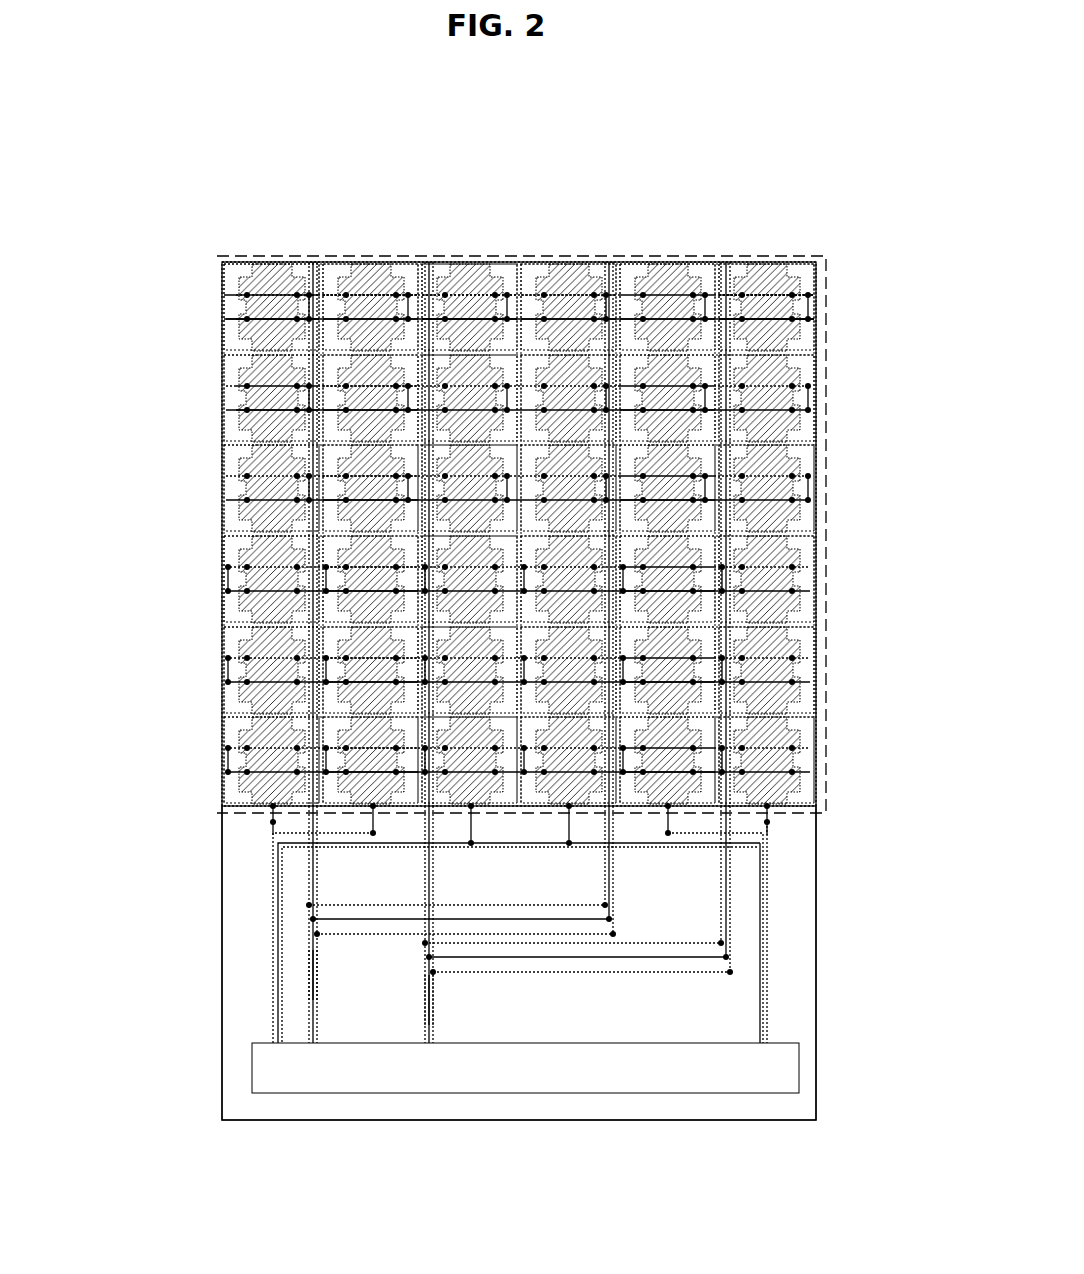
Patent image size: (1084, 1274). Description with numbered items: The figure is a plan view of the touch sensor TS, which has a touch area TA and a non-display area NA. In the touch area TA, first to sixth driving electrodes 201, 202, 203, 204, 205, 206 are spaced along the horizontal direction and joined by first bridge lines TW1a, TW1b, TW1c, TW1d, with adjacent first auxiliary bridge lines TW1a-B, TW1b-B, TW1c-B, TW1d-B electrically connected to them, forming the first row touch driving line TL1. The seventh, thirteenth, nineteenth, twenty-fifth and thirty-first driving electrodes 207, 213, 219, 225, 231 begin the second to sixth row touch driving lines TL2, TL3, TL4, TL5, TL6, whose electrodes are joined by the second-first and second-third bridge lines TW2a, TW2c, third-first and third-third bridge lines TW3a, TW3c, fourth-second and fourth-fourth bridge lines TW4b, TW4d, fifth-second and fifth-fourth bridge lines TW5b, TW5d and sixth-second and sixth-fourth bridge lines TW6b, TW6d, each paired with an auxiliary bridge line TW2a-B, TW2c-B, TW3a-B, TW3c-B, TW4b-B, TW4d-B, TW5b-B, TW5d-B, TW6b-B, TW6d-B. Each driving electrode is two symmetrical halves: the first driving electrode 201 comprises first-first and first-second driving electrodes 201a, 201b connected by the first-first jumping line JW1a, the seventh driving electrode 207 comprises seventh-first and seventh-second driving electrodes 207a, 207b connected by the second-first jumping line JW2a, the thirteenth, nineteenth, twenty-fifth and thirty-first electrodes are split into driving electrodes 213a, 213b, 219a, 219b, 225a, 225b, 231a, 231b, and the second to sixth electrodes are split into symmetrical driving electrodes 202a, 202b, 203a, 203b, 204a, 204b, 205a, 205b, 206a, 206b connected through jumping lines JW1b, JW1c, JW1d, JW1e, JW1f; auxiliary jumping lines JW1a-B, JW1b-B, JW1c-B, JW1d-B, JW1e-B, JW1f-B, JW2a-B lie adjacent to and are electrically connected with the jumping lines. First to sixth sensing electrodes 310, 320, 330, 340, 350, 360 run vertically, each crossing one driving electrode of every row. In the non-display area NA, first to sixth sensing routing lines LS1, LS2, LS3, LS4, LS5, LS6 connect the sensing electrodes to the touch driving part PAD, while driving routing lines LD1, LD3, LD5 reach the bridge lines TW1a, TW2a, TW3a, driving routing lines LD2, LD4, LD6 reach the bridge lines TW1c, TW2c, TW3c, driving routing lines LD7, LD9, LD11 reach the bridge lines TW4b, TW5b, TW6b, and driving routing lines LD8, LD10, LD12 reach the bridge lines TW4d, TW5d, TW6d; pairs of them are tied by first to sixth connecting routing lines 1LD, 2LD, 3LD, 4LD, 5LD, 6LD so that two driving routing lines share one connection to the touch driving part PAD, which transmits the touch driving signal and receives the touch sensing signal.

The first driving electrode 201 is at (282, 258).
The first-first driving electrode 201a is at (240, 262).
The first-second driving electrode 201b is at (297, 262).
The second driving electrode 202 is at (384, 258).
The first sub-electrode 202a is at (339, 262).
The second sub-electrode 202b is at (396, 262).
The third driving electrode 203 is at (484, 258).
The first sub-electrode 203a is at (438, 262).
The second sub-electrode 203b is at (495, 262).
The fourth driving electrode 204 is at (576, 258).
The first sub-electrode 204a is at (537, 262).
The second sub-electrode 204b is at (594, 262).
The fifth driving electrode 205 is at (682, 258).
The first sub-electrode 205a is at (636, 262).
The second sub-electrode 205b is at (693, 262).
The sixth driving electrode 206 is at (782, 258).
The first sub-electrode 206a is at (735, 262).
The second sub-electrode 206b is at (792, 262).
The seventh driving electrode 207 is at (145, 362).
The seventh-first driving electrode 207a is at (246, 385).
The seventh-second driving electrode 207b is at (296, 410).
The thirteenth driving electrode 213 is at (145, 450).
The thirteenth-first driving electrode 213a is at (246, 475).
The thirteenth-second driving electrode 213b is at (296, 500).
The nineteenth driving electrode 219 is at (145, 542).
The nineteenth-first driving electrode 219a is at (246, 566).
The nineteenth-second driving electrode 219b is at (296, 591).
The twenty-fifth driving electrode 225 is at (145, 634).
The twenty-fifth-first driving electrode 225a is at (246, 657).
The twenty-fifth-second driving electrode 225b is at (296, 682).
The thirty-first driving electrode 231 is at (145, 725).
The thirty-first-first driving electrode 231a is at (246, 747).
The thirty-first-second driving electrode 231b is at (296, 772).
The first sensing electrode 310 is at (268, 812).
The second sensing electrode 320 is at (375, 814).
The third sensing electrode 330 is at (474, 814).
The fourth sensing electrode 340 is at (568, 814).
The fifth sensing electrode 350 is at (666, 814).
The sixth sensing electrode 360 is at (770, 814).
The touch sensor TS is at (847, 126).
The touch area TA is at (832, 318).
The non-display area NA is at (212, 972).
The touch driving part PAD is at (525, 1068).
The first row touch driving line TL1 is at (844, 347).
The second row touch driving line TL2 is at (844, 437).
The third row touch driving line TL3 is at (844, 528).
The fourth row touch driving line TL4 is at (844, 619).
The fifth row touch driving line TL5 is at (844, 709).
The sixth row touch driving line TL6 is at (844, 800).
The first sensing routing line LS1 is at (271, 880).
The second sensing routing line LS2 is at (276, 903).
The third sensing routing line LS3 is at (280, 925).
The fourth sensing routing line LS4 is at (762, 880).
The fifth sensing routing line LS5 is at (765, 903).
The sixth sensing routing line LS6 is at (769, 925).
The first driving routing line LD1 is at (318, 853).
The second driving routing line LD2 is at (603, 856).
The third driving routing line LD3 is at (315, 873).
The fourth driving routing line LD4 is at (607, 874).
The fifth driving routing line LD5 is at (320, 891).
The sixth driving routing line LD6 is at (611, 892).
The seventh driving routing line LD7 is at (434, 853).
The eighth driving routing line LD8 is at (719, 856).
The ninth driving routing line LD9 is at (431, 873).
The tenth driving routing line LD10 is at (724, 876).
The eleventh driving routing line LD11 is at (436, 891).
The twelfth driving routing line LD12 is at (728, 894).
The first connecting routing line 1LD is at (318, 955).
The second connecting routing line 2LD is at (315, 973).
The third connecting routing line 3LD is at (320, 991).
The fourth connecting routing line 4LD is at (434, 979).
The fifth connecting routing line 5LD is at (431, 998).
The sixth connecting routing line 6LD is at (436, 1016).
The first-first jumping line JW1a is at (246, 294).
The first-first auxiliary jumping line JW1a-B is at (246, 318).
The first jumping line JW1b is at (380, 293).
The first auxiliary jumping line JW1b-B is at (400, 317).
The first jumping line JW1c is at (547, 293).
The first auxiliary jumping line JW1c-B is at (562, 317).
The first jumping line JW1d is at (588, 293).
The first auxiliary jumping line JW1d-B is at (602, 317).
The first jumping line JW1e is at (737, 293).
The first auxiliary jumping line JW1e-B is at (750, 317).
The first jumping line JW1f is at (806, 293).
The first auxiliary jumping line JW1f-B is at (804, 317).
The second-first jumping line JW2a is at (246, 387).
The second-first auxiliary jumping line JW2a-B is at (246, 411).
The first-first bridge line TW1a is at (265, 293).
The first-first auxiliary bridge line TW1a-B is at (300, 317).
The first bridge line TW1b is at (442, 293).
The first auxiliary bridge line TW1b-B is at (492, 317).
The first-third bridge line TW1c is at (642, 293).
The first-third auxiliary bridge line TW1c-B is at (692, 317).
The first bridge line TW1d is at (790, 293).
The first auxiliary bridge line TW1d-B is at (800, 317).
The second-first bridge line TW2a is at (336, 384).
The second-first auxiliary bridge line TW2a-B is at (336, 408).
The second-third bridge line TW2c is at (724, 386).
The second-third auxiliary bridge line TW2c-B is at (724, 410).
The third-first bridge line TW3a is at (338, 477).
The third-first auxiliary bridge line TW3a-B is at (338, 501).
The third-third bridge line TW3c is at (724, 476).
The third-third auxiliary bridge line TW3c-B is at (724, 500).
The fourth-second bridge line TW4b is at (338, 568).
The fourth-second auxiliary bridge line TW4b-B is at (338, 592).
The fourth-fourth bridge line TW4d is at (724, 567).
The fourth-fourth auxiliary bridge line TW4d-B is at (724, 591).
The fifth-second bridge line TW5b is at (338, 659).
The fifth-second auxiliary bridge line TW5b-B is at (338, 683).
The fifth-fourth bridge line TW5d is at (724, 658).
The fifth-fourth auxiliary bridge line TW5d-B is at (724, 682).
The sixth-second bridge line TW6b is at (338, 749).
The sixth-second auxiliary bridge line TW6b-B is at (338, 773).
The sixth-fourth bridge line TW6d is at (724, 748).
The sixth-fourth auxiliary bridge line TW6d-B is at (724, 772).